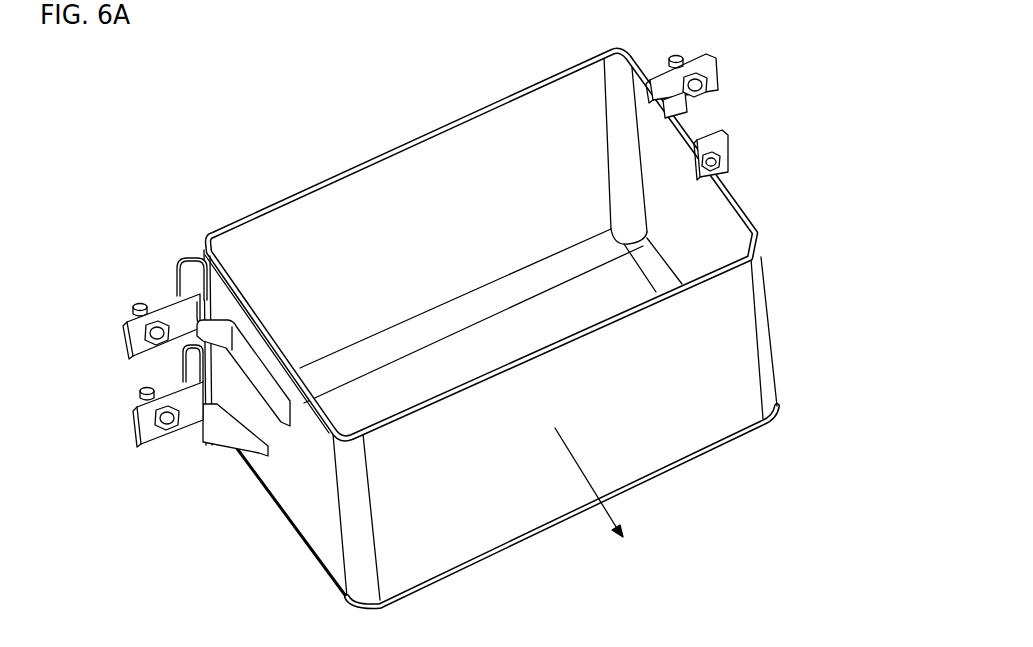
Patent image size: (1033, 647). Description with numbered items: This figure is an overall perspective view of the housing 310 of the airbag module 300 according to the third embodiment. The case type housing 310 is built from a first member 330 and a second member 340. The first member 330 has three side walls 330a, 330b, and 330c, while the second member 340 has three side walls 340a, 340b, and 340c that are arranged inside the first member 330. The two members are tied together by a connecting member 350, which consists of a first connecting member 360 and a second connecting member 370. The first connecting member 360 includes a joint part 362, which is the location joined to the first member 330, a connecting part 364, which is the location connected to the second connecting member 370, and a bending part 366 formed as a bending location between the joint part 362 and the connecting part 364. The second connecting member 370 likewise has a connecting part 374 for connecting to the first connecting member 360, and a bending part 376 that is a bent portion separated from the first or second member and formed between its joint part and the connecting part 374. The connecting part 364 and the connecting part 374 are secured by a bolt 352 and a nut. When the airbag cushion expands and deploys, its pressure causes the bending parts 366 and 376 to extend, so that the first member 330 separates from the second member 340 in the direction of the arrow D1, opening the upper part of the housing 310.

The airbag module 300 is at (519, 321).
The housing 310 is at (773, 311).
The first member 330 is at (478, 506).
The side wall 330a is at (277, 500).
The side wall 330b is at (455, 553).
The side wall 330c is at (737, 200).
The second member 340 is at (521, 245).
The side wall 340a is at (268, 318).
The side wall 340b is at (417, 137).
The side wall 340c is at (640, 105).
The connecting member 350 is at (114, 291).
The bolt 352 is at (143, 336).
The first connecting member 360 is at (165, 426).
The joint part 362 is at (273, 395).
The connecting part 364 is at (178, 346).
The bending part 366 is at (253, 343).
The second connecting member 370 is at (133, 270).
The connecting part 374 is at (133, 310).
The bending part 376 is at (183, 257).
The arrow D1 is at (572, 453).